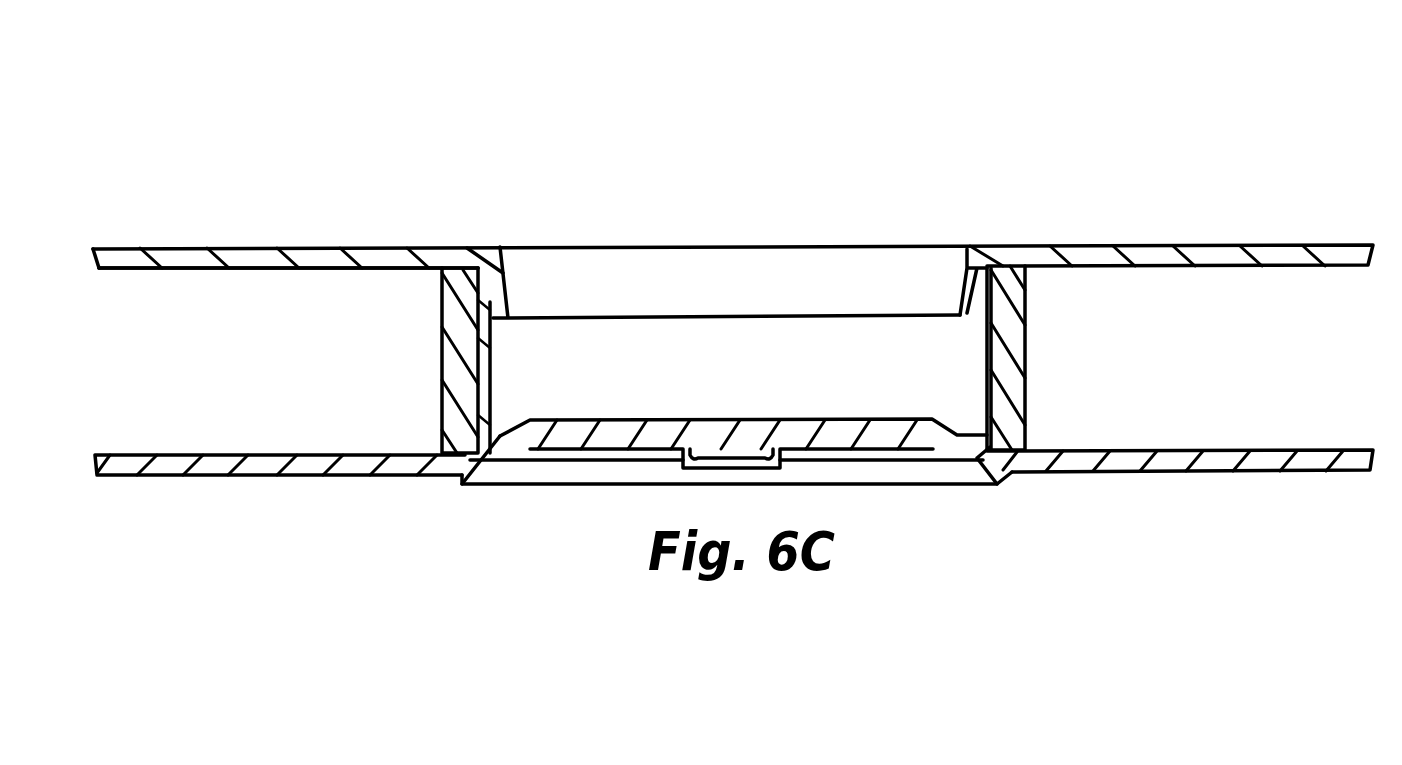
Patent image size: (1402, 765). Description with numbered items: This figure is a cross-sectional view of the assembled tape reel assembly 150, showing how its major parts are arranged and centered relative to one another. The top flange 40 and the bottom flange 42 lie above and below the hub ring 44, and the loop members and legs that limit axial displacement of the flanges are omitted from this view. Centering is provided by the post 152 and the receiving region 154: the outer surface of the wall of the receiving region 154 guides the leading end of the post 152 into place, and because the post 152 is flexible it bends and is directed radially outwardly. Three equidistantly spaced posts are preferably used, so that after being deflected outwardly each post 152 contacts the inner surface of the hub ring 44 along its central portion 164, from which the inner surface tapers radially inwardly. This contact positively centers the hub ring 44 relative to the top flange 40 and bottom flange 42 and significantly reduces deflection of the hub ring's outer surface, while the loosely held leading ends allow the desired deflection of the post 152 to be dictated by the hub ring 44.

The tape reel assembly 150 is at (733, 305).
The top flange 40 is at (302, 249).
The bottom flange 42 is at (280, 476).
The hub ring 44 is at (447, 357).
The post 152 is at (488, 362).
The receiving region 154 is at (497, 436).
The central portion 164 is at (987, 352).